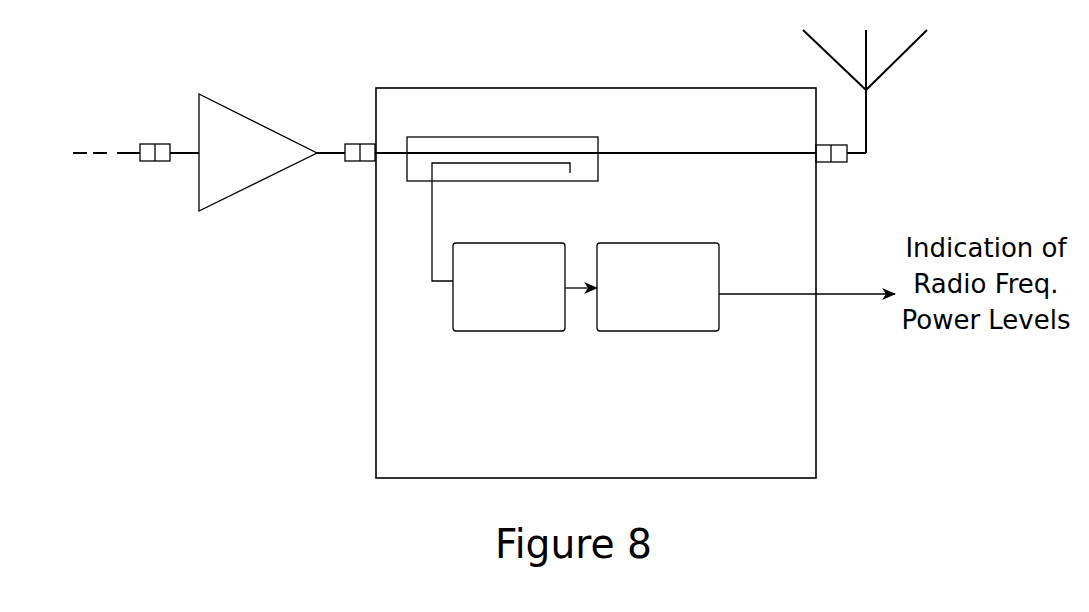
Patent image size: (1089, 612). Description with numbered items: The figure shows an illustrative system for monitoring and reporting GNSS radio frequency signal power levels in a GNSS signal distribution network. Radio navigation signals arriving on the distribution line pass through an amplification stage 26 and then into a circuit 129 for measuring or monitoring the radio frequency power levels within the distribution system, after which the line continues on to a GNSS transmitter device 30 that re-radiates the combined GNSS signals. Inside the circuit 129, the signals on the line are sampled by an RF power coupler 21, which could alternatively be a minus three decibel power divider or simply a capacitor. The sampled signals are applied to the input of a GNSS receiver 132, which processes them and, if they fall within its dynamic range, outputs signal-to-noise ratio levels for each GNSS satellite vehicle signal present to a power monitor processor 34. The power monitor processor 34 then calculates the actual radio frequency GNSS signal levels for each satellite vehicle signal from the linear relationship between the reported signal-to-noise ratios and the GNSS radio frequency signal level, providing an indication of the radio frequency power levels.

The amplification stage 26 is at (237, 202).
The circuit for measuring or monitoring radio frequency power levels 129 is at (577, 85).
The RF power coupler 21 is at (456, 137).
The GNSS receiver 132 is at (547, 340).
The power monitor processor 34 is at (702, 337).
The GNSS transmitter device 30 is at (915, 77).